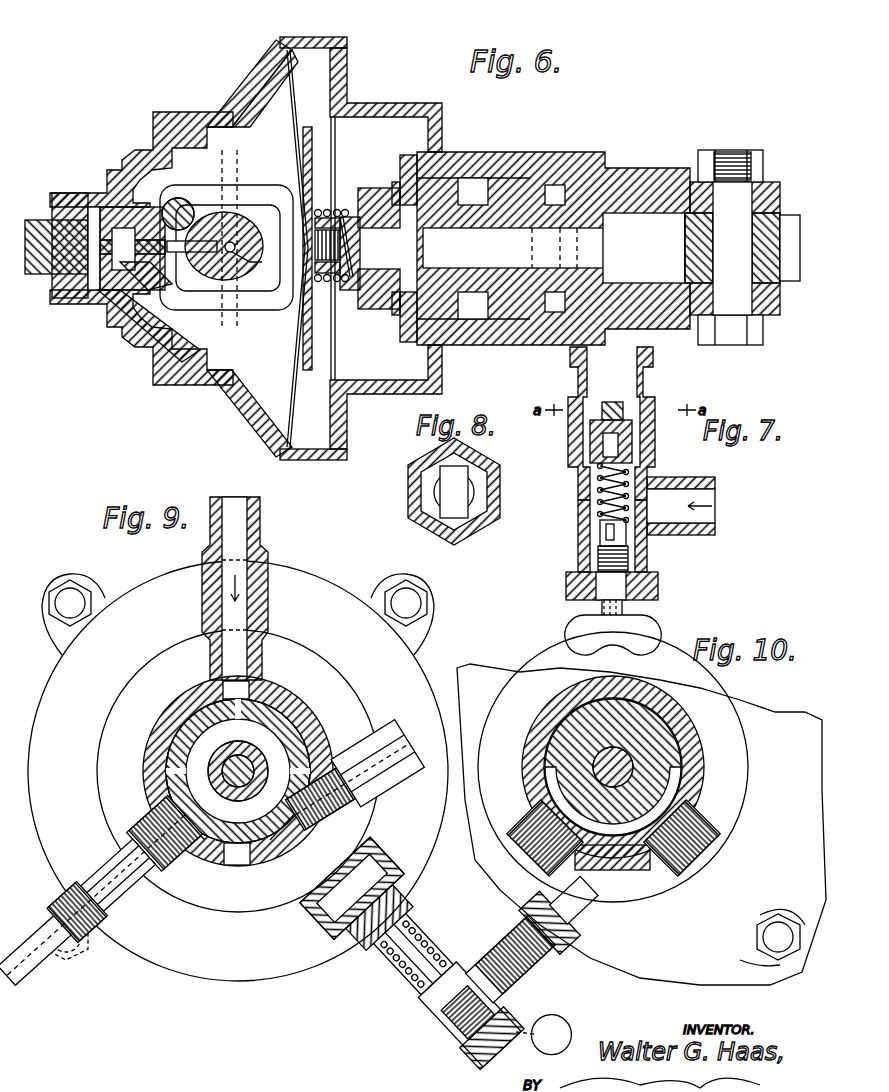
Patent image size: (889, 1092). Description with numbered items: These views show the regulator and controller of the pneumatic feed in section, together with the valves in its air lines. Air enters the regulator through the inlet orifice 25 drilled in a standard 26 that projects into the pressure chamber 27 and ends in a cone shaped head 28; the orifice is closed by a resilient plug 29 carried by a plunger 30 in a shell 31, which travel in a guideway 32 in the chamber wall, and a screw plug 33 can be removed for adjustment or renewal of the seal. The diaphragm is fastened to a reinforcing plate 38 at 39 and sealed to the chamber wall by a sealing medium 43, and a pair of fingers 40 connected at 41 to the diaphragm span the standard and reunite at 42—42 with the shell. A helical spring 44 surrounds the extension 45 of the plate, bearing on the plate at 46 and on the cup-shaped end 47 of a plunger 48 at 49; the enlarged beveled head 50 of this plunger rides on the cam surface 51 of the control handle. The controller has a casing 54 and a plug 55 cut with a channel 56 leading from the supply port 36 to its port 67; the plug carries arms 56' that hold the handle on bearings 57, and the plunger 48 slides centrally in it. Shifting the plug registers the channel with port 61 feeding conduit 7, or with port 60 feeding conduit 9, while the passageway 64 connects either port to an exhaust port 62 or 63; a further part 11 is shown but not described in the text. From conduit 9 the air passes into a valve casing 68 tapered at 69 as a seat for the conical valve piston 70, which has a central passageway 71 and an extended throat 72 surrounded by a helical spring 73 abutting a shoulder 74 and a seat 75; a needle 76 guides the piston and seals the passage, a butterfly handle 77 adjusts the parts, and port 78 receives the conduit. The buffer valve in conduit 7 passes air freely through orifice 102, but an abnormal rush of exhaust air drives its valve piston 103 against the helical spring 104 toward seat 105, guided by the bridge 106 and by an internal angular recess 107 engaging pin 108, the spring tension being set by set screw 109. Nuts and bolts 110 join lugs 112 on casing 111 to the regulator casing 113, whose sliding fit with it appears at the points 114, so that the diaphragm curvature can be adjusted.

In FIG. 9, the conduit 7 is at (75, 975).
In FIG. 9, the conduit 9 is at (520, 918).
In FIG. 9, the fitting 11 is at (400, 745).
In FIG. 6, the inlet orifice 25 is at (212, 280).
In FIG. 6, the standard 26 is at (230, 180).
In FIG. 6, the pressure chamber 27 is at (262, 117).
In FIG. 6, the cone shaped head 28 is at (246, 212).
In FIG. 6, the resilient plug 29 is at (198, 193).
In FIG. 6, the plunger 30 is at (105, 300).
In FIG. 6, the shell 31 is at (150, 300).
In FIG. 6, the guideway 32 is at (122, 318).
In FIG. 6, the screw plug 33 is at (52, 193).
In FIG. 9, the supply port 36 is at (262, 524).
In FIG. 6, the reinforcing plate 38 is at (308, 125).
In FIG. 6, the diaphragm attachment point 39 is at (236, 244).
In FIG. 6, the pair of fingers 40 is at (240, 186).
In FIG. 6, the finger connection 41 is at (255, 267).
In FIG. 6, the juncture 42 is at (170, 200).
In FIG. 6, the sealing medium 43 is at (294, 52).
In FIG. 6, the helical spring 44 is at (345, 200).
In FIG. 6, the extension 45 is at (332, 208).
In FIG. 6, the spring bearing point 46 is at (325, 228).
In FIG. 6, the cup-shaped end 47 is at (346, 300).
In FIG. 6, the plunger 48 is at (520, 226).
In FIG. 9, the plunger 48 is at (236, 746).
In FIG. 10, the plunger 48 is at (598, 762).
In FIG. 6, the spring bearing point 49 is at (352, 292).
In FIG. 6, the enlarged beveled head 50 is at (660, 215).
In FIG. 6, the cam surface 51 is at (790, 215).
In FIG. 9, the casing 54 is at (292, 738).
In FIG. 10, the casing 54 is at (688, 752).
In FIG. 6, the plug 55 is at (638, 170).
In FIG. 9, the plug 55 is at (278, 712).
In FIG. 10, the plug 55 is at (664, 736).
In FIG. 6, the channel 56 is at (572, 214).
In FIG. 9, the channel 56 is at (191, 705).
In FIG. 6, the arms 56' is at (744, 247).
In FIG. 6, the bearings 57 is at (746, 258).
In FIG. 9, the port 60 is at (276, 860).
In FIG. 9, the port 61 is at (168, 814).
In FIG. 10, the exhaust port 62 is at (692, 826).
In FIG. 10, the exhaust port 63 is at (540, 826).
In FIG. 6, the channel 64 is at (474, 178).
In FIG. 9, the channel 64 is at (178, 788).
In FIG. 10, the channel 64 is at (678, 802).
In FIG. 9, the port 67 is at (237, 852).
In FIG. 9, the valve casing 68 is at (335, 935).
In FIG. 9, the tapered seat 69 is at (372, 950).
In FIG. 9, the valve piston 70 is at (415, 905).
In FIG. 9, the passageway 71 is at (400, 955).
In FIG. 9, the extended throat 72 is at (420, 962).
In FIG. 9, the helical spring 73 is at (440, 985).
In FIG. 9, the shoulder 74 is at (450, 940).
In FIG. 9, the seat 75 is at (458, 1005).
In FIG. 9, the needle 76 is at (470, 975).
In FIG. 9, the butterfly handle 77 is at (556, 1020).
In FIG. 9, the port 78 is at (492, 900).
In FIG. 7, the orifice 102 is at (705, 490).
In FIG. 8, the valve piston 103 is at (470, 492).
In FIG. 7, the valve piston 103 is at (648, 446).
In FIG. 7, the helical spring 104 is at (602, 510).
In FIG. 7, the seat 105 is at (602, 528).
In FIG. 8, the bridge 106 is at (470, 462).
In FIG. 7, the bridge 106 is at (624, 410).
In FIG. 7, the internal angular recess 107 is at (600, 440).
In FIG. 7, the pin 108 is at (660, 532).
In FIG. 7, the set screw 109 is at (650, 625).
In FIG. 9, the nuts and bolts 110 is at (72, 590).
In FIG. 10, the nuts and bolts 110 is at (775, 952).
In FIG. 6, the casing 111 is at (350, 62).
In FIG. 9, the casing 111 is at (300, 602).
In FIG. 10, the casing 111 is at (776, 712).
In FIG. 9, the lugs 112 is at (118, 586).
In FIG. 10, the lugs 112 is at (762, 918).
In FIG. 6, the regulator casing 113 is at (262, 62).
In FIG. 6, the sliding fit points 114 is at (305, 36).